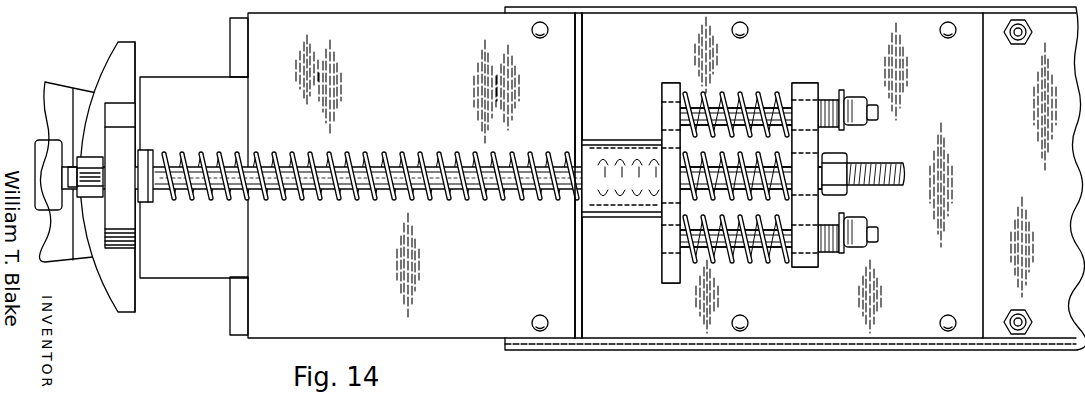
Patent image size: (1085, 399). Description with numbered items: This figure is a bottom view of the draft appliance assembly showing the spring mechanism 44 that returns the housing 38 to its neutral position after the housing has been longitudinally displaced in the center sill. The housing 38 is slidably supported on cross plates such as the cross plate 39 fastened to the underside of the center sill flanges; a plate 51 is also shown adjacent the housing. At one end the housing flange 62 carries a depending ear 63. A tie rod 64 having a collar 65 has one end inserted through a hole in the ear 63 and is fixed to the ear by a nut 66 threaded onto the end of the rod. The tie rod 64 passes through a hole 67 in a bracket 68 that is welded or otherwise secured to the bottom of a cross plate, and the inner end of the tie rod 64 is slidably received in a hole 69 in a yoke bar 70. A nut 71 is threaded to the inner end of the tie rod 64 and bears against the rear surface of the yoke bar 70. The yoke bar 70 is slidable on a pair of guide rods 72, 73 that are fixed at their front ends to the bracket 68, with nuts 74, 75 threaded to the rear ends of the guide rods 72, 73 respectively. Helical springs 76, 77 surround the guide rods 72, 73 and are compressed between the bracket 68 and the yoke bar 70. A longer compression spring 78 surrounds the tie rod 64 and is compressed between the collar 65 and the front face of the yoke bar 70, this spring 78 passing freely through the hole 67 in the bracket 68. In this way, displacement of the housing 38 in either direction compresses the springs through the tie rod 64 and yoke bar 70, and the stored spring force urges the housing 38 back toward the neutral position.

The housing 38 is at (184, 272).
The cross plate 39 is at (394, 22).
The spring mechanism 44 is at (356, 160).
The mounting plate 51 is at (230, 51).
The housing flange 62 is at (124, 48).
The depending ear 63 is at (107, 109).
The tie rod 64 is at (279, 165).
The collar 65 is at (146, 150).
The nut 66 is at (77, 166).
The hole 67 is at (608, 146).
The bracket 68 is at (668, 270).
The hole 69 is at (800, 150).
The yoke bar 70 is at (800, 83).
The nut 71 is at (845, 195).
The guide rod 72 is at (822, 255).
The guide rod 73 is at (825, 100).
The nut 74 is at (862, 255).
The nut 75 is at (858, 106).
The helical spring 76 is at (747, 263).
The helical spring 77 is at (735, 92).
The compression spring 78 is at (450, 190).